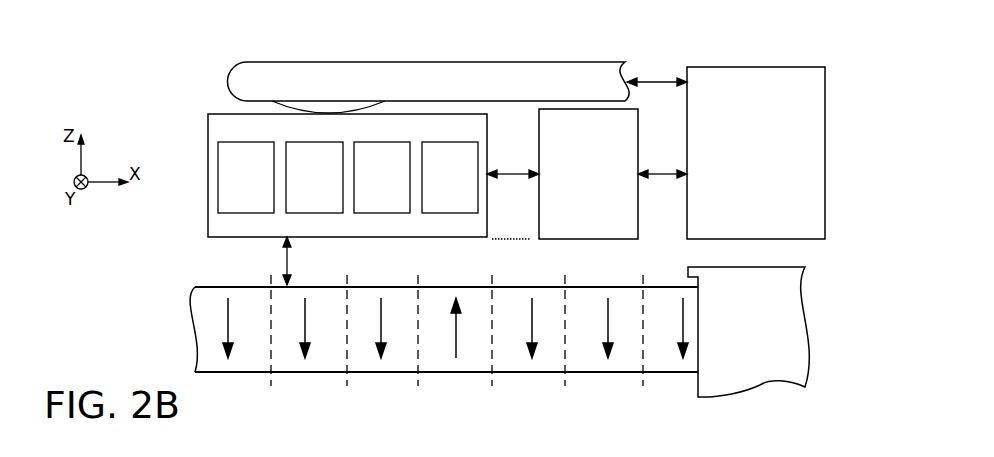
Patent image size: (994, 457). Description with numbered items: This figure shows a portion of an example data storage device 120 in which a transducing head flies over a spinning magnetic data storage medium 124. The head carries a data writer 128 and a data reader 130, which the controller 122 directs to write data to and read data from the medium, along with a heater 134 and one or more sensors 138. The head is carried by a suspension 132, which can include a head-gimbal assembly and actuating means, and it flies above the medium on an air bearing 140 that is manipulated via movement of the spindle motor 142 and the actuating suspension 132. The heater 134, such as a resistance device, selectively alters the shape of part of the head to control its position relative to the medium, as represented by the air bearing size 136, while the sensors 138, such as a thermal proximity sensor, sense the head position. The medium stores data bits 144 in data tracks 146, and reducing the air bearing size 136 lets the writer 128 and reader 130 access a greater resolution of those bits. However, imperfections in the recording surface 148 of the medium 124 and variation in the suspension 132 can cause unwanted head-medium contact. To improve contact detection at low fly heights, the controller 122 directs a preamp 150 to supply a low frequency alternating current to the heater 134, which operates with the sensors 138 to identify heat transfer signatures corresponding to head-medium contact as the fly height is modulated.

The data storage device 120 is at (135, 65).
The controller 122 is at (771, 234).
The magnetic data storage medium 124 is at (203, 352).
The data writer 128 is at (262, 187).
The data reader 130 is at (330, 187).
The suspension 132 is at (497, 53).
The heater 134 is at (398, 187).
The air bearing size 136 is at (288, 273).
The sensor 138 is at (466, 187).
The air bearing 140 is at (210, 253).
The spindle motor 142 is at (767, 342).
The data bits 144 is at (457, 358).
The data tracks 146 is at (381, 378).
The recording surface 148 is at (204, 285).
The preamp 150 is at (604, 237).